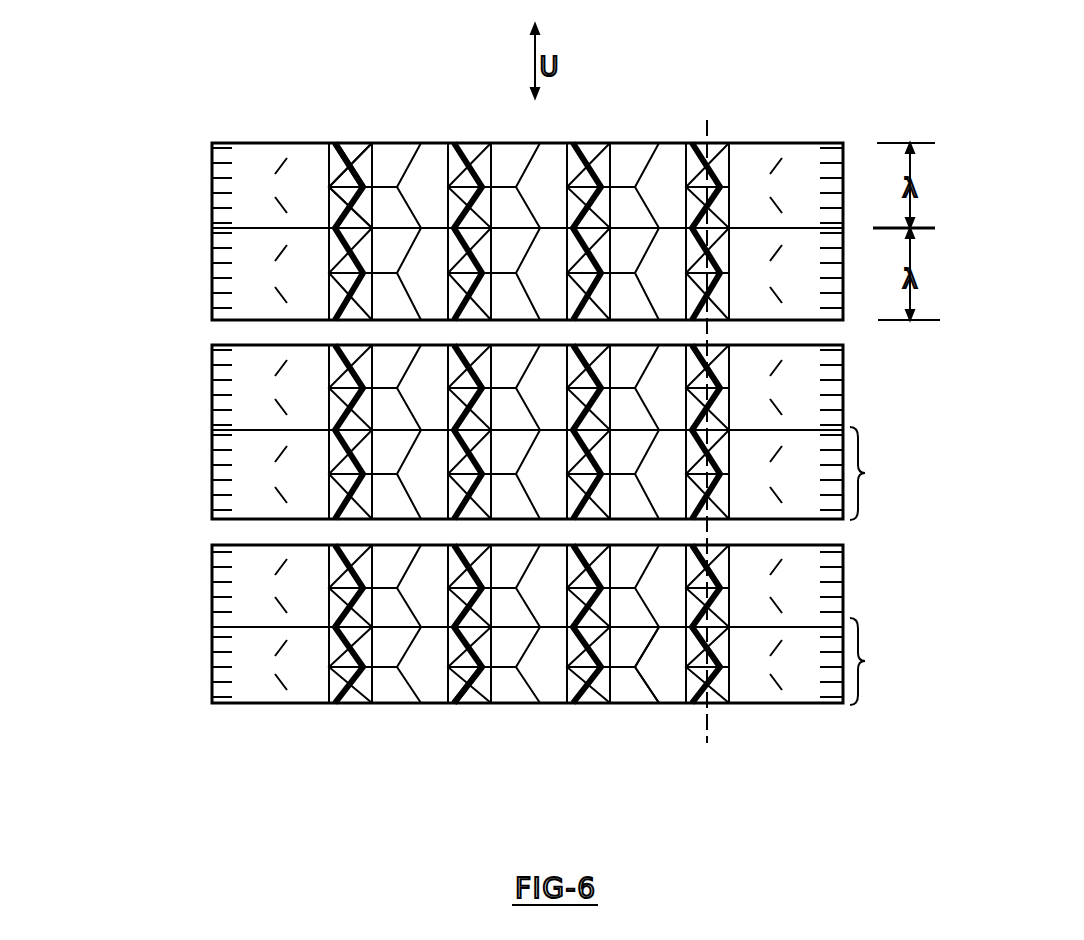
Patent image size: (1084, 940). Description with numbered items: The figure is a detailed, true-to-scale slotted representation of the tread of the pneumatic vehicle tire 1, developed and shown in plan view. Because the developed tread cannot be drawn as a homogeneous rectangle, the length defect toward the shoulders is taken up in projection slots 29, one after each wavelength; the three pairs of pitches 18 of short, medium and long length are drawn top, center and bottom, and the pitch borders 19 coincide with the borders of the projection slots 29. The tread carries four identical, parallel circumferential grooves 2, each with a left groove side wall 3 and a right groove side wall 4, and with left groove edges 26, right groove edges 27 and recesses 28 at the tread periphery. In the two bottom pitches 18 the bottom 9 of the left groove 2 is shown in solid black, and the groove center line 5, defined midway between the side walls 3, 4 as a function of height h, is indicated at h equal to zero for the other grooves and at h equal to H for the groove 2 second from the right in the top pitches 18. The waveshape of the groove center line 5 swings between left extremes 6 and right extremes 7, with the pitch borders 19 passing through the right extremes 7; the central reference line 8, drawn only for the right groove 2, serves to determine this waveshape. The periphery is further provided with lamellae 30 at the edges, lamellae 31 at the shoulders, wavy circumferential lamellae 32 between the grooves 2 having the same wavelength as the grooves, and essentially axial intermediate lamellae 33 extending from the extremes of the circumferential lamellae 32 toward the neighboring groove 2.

The pneumatic vehicle tire 1 is at (755, 152).
The circumferential groove 2 is at (355, 145).
The left groove side wall 3 is at (458, 695).
The right groove side wall 4 is at (467, 703).
The groove center line 5 is at (585, 142).
The left extreme 6 is at (658, 703).
The right extreme 7 is at (733, 687).
The central reference line 8 is at (710, 727).
The groove bottom 9 is at (343, 703).
The pitch 18 is at (871, 566).
The pitch border 19 is at (807, 428).
The left groove edge 26 is at (328, 183).
The right groove edge 27 is at (366, 150).
The recess 28 is at (327, 228).
The projection slot 29 is at (211, 229).
The lamella 30 is at (210, 142).
The lamella 31 is at (283, 160).
The circumferential lamella 32 is at (413, 690).
The intermediate lamella 33 is at (373, 703).